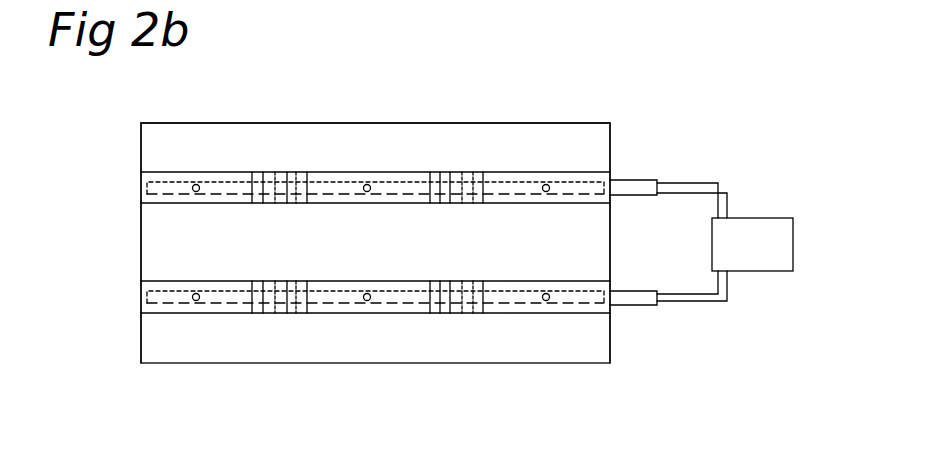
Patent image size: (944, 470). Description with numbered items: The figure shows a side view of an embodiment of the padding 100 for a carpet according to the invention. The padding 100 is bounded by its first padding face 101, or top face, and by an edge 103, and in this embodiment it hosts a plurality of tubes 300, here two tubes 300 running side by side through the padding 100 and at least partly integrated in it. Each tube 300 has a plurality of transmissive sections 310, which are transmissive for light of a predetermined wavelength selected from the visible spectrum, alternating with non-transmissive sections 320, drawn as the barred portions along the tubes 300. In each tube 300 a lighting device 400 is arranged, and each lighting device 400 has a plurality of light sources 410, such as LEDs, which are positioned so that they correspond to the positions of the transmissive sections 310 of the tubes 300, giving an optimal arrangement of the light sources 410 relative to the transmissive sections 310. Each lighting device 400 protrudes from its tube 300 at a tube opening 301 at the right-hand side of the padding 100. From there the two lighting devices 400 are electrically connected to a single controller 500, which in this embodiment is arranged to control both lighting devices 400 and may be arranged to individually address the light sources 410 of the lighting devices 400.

The padding 100 is at (179, 383).
The first padding face 101 is at (610, 123).
The edge 103 is at (527, 122).
The tube 300 is at (148, 172).
The tube opening 301 is at (629, 171).
The transmissive section 310 is at (180, 180).
The non-transmissive section 320 is at (465, 178).
The lighting device 400 is at (398, 180).
The light source 410 is at (367, 185).
The controller 500 is at (764, 209).